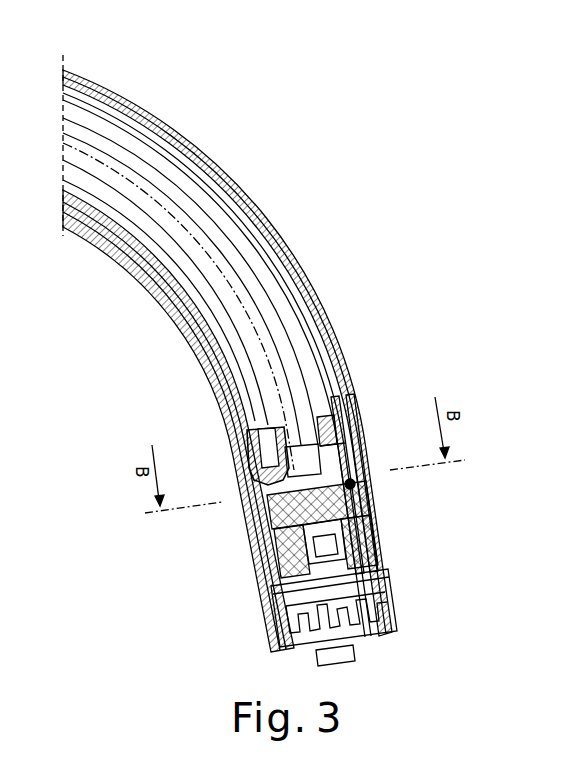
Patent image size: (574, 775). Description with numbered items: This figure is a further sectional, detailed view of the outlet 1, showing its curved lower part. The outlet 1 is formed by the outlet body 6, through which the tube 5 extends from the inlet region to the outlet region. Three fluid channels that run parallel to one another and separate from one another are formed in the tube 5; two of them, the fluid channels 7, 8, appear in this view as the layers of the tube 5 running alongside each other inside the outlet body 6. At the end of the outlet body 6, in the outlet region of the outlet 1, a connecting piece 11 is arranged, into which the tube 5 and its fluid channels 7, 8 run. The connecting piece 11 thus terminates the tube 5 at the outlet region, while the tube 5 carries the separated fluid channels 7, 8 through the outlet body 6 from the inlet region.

The outlet 1 is at (332, 174).
The tube 5 is at (52, 200).
The outlet body 6 is at (207, 157).
The fluid channel 7 is at (163, 126).
The fluid channel 8 is at (84, 222).
The connecting piece 11 is at (375, 505).